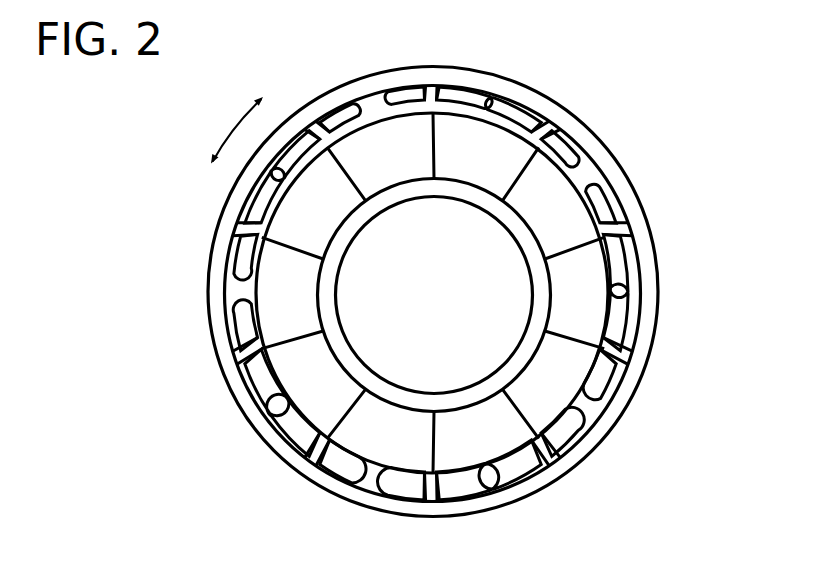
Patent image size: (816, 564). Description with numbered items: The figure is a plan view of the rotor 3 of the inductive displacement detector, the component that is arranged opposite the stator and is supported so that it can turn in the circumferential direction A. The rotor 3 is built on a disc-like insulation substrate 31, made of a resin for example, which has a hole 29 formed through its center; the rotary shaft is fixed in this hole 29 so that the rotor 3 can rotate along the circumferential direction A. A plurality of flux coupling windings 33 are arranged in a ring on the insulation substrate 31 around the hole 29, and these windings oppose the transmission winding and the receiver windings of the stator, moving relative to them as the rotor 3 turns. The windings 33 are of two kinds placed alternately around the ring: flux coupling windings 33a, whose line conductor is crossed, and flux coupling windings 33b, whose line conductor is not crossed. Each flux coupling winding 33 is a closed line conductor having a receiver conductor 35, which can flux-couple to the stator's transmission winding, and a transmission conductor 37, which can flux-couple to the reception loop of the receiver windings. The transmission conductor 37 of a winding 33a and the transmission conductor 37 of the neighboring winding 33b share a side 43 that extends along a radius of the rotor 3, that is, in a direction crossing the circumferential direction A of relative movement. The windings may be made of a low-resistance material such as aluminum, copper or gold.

The rotor 3 is at (717, 40).
The hole 29 is at (340, 285).
The insulation substrate 31 is at (637, 190).
The flux coupling windings 33 is at (503, 267).
The flux coupling winding with crossed line conductor 33a is at (495, 140).
The flux coupling winding with non-crossed line conductor 33b is at (558, 197).
The receiver conductor 35 is at (452, 70).
The transmission conductor 37 is at (456, 184).
The side 43 is at (505, 208).
The circumferential direction A is at (232, 127).